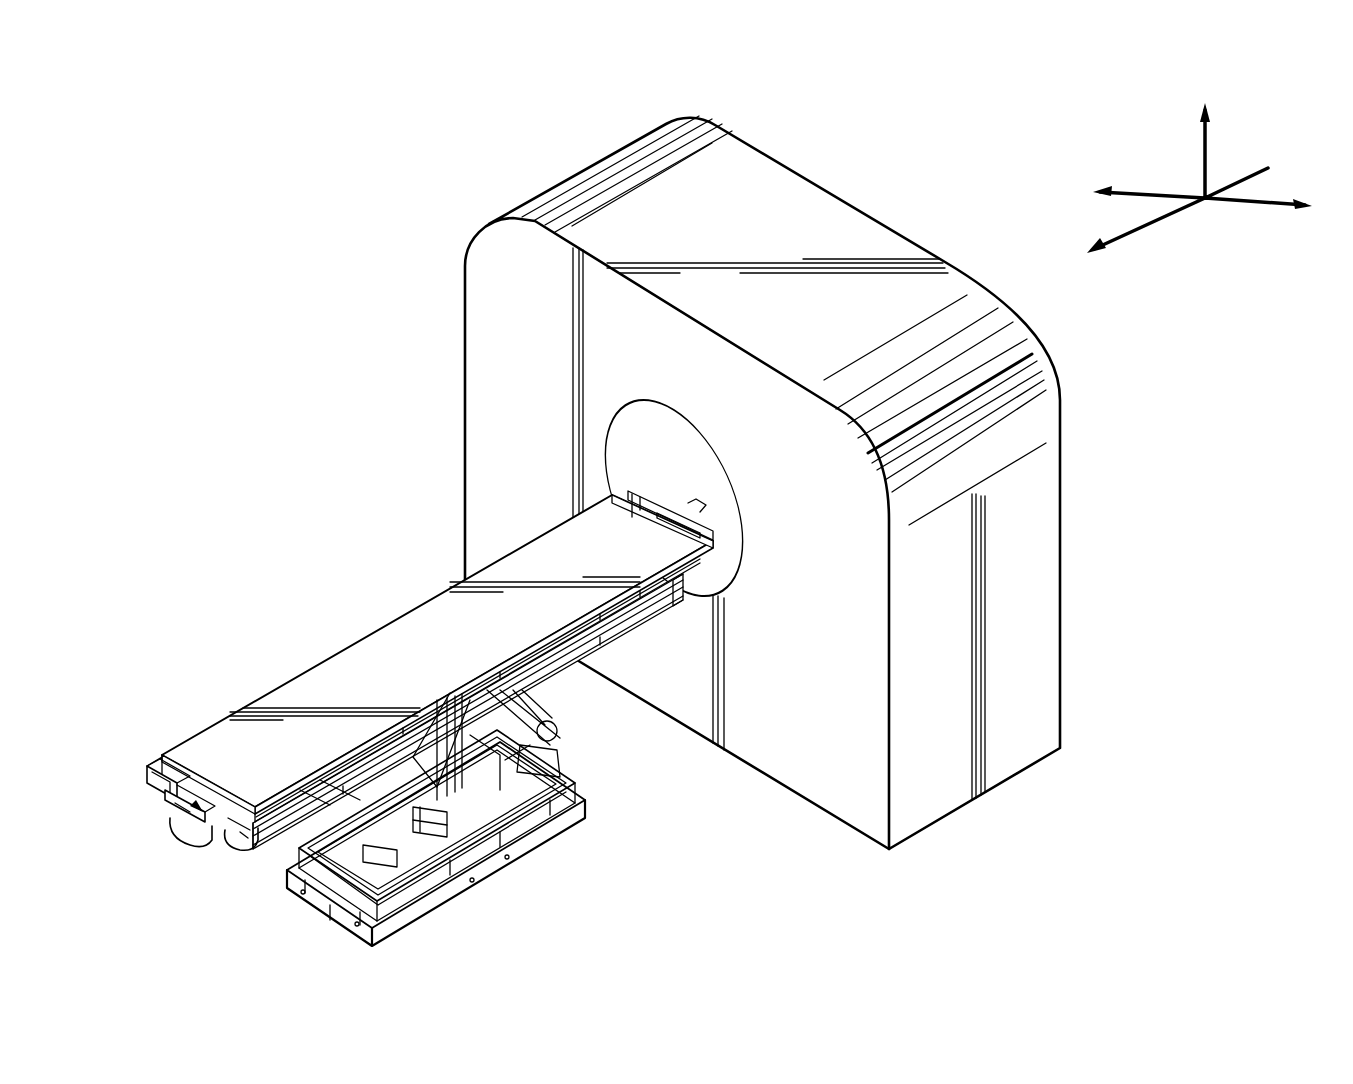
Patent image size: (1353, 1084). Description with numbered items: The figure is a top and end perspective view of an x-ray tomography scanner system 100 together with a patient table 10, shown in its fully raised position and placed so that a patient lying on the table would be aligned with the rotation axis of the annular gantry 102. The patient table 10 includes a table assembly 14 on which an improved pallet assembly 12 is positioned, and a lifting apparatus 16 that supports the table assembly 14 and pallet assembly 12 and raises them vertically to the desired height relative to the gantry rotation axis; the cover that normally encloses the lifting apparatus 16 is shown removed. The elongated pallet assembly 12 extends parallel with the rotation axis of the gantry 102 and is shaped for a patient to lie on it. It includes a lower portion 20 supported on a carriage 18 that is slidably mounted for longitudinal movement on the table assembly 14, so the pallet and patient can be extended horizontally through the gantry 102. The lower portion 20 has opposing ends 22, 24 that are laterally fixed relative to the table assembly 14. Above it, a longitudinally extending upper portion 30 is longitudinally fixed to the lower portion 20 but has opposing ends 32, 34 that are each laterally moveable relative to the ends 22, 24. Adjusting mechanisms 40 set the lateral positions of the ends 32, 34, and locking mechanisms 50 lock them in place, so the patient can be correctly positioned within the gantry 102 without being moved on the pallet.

The x-ray tomography scanner system 100 is at (386, 238).
The annular gantry 102 is at (862, 222).
The lower portion 20 is at (714, 570).
The patient table 10 is at (355, 625).
The pallet assembly 12 is at (428, 580).
The table assembly 14 is at (257, 850).
The lifting apparatus 16 is at (540, 817).
The upper portion 30 is at (280, 682).
The end of upper portion 32 is at (198, 748).
The adjusting mechanism 40 is at (152, 745).
The end of upper portion 34 is at (632, 515).
The end of lower portion 24 is at (663, 507).
The locking mechanism 50 is at (188, 827).
The end of lower portion 22 is at (150, 777).
The carriage 18 is at (175, 793).